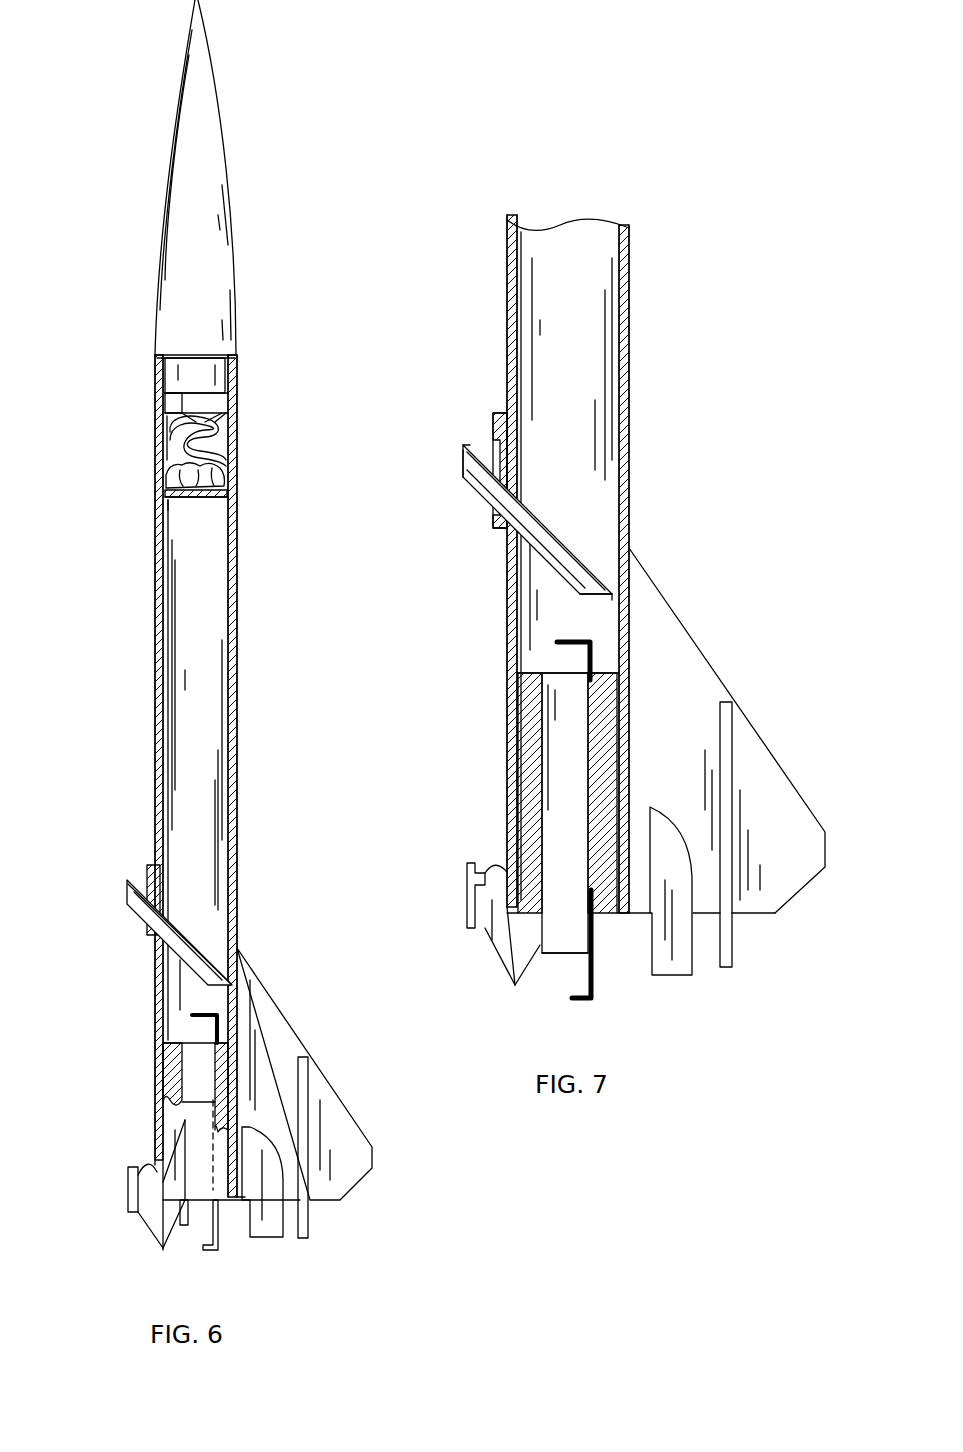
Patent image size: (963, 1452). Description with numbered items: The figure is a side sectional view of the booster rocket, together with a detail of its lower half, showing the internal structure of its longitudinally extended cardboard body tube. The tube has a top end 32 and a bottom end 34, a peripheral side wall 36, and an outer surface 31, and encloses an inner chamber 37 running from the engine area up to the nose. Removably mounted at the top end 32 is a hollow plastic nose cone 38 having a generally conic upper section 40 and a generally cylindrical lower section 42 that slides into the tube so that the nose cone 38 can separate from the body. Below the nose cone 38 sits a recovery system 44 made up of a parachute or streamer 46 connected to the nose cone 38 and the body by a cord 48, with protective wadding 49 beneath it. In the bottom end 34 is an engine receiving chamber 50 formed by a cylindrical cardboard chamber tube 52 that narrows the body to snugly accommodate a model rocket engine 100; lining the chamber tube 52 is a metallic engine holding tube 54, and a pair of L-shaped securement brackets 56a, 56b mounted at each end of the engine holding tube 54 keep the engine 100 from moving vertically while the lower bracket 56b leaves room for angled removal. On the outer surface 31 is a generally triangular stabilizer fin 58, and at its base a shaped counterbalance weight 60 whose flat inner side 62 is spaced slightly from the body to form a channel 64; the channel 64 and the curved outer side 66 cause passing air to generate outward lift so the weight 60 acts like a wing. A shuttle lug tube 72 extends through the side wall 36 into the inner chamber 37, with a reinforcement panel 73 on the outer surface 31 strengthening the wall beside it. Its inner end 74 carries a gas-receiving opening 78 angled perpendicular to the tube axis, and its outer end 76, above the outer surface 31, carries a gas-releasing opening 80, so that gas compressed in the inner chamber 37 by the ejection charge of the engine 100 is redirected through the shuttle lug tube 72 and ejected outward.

In FIG. 6, the outer surface 31 is at (245, 590).
In FIG. 7, the outer surface 31 is at (635, 332).
In FIG. 6, the top end 32 is at (250, 389).
In FIG. 6, the bottom end 34 is at (152, 1118).
In FIG. 6, the peripheral side wall 36 is at (160, 637).
In FIG. 6, the inner chamber 37 is at (200, 718).
In FIG. 7, the inner chamber 37 is at (568, 436).
In FIG. 6, the nose cone 38 is at (205, 170).
In FIG. 6, the upper section 40 is at (200, 290).
In FIG. 6, the lower section 42 is at (203, 381).
In FIG. 6, the recovery system 44 is at (152, 437).
In FIG. 6, the parachute or streamer 46 is at (163, 467).
In FIG. 6, the cord 48 is at (225, 428).
In FIG. 6, the protective wadding 49 is at (222, 480).
In FIG. 7, the engine receiving chamber 50 is at (568, 778).
In FIG. 7, the chamber tube 52 is at (527, 837).
In FIG. 7, the engine holding tube 54 is at (565, 913).
In FIG. 7, the L-shaped securement bracket 56a is at (560, 640).
In FIG. 7, the L-shaped securement bracket 56b is at (594, 995).
In FIG. 7, the stabilizer fin 58 is at (788, 870).
In FIG. 6, the shaped counterbalance weight 60 is at (270, 1234).
In FIG. 7, the shaped counterbalance weight 60 is at (672, 947).
In FIG. 6, the flat inner side 62 is at (247, 1168).
In FIG. 6, the channel 64 is at (240, 1200).
In FIG. 6, the curved outer side 66 is at (268, 1140).
In FIG. 6, the shuttle lug tube 72 is at (185, 947).
In FIG. 7, the shuttle lug tube 72 is at (478, 494).
In FIG. 6, the reinforcement panel 73 is at (150, 872).
In FIG. 7, the reinforcement panel 73 is at (499, 412).
In FIG. 7, the inner end 74 is at (603, 575).
In FIG. 7, the outer end 76 is at (469, 446).
In FIG. 7, the gas-receiving opening 78 is at (602, 602).
In FIG. 7, the gas-releasing opening 80 is at (462, 458).
In FIG. 7, the model rocket engine 100 is at (566, 958).